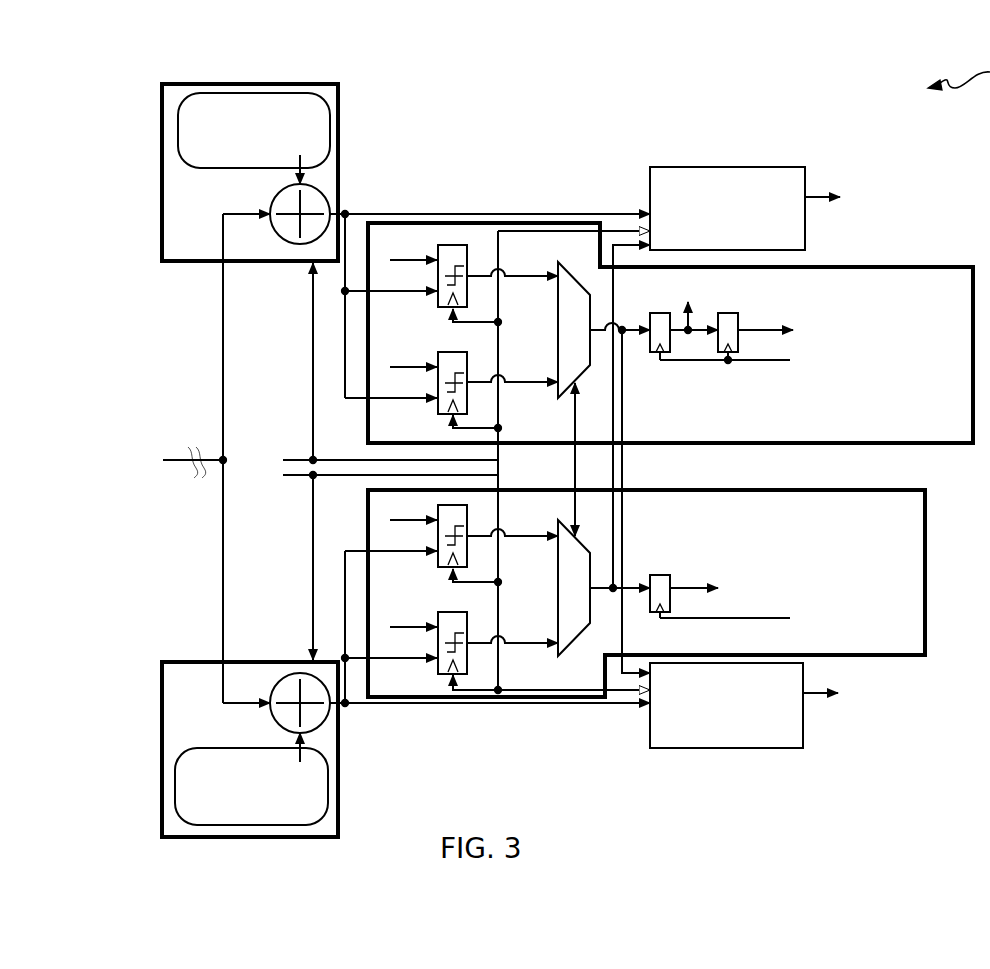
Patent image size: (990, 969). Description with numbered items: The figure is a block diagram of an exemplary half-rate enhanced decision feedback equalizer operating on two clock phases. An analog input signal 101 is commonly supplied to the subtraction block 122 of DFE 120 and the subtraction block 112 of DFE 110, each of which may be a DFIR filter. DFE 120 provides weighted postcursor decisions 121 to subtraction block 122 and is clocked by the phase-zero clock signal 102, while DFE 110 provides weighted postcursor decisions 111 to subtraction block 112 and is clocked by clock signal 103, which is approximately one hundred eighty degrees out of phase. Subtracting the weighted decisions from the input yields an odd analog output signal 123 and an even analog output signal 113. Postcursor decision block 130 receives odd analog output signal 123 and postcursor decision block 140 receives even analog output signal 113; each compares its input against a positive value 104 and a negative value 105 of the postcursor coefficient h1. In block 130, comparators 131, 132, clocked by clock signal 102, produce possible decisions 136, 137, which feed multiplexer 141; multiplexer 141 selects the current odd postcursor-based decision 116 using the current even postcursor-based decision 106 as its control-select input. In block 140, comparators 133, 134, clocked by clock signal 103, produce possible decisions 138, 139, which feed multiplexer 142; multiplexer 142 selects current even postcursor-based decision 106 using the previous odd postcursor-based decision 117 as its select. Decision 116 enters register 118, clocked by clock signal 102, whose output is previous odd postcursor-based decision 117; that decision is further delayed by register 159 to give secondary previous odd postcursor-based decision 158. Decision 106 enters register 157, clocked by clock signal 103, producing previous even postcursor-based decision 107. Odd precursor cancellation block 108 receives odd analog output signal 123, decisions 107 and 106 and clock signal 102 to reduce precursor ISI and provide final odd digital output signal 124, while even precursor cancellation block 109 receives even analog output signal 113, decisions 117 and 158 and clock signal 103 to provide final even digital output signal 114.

The analog input signal 101 is at (218, 462).
The clock signal 102 is at (800, 372).
The clock signal 103 is at (826, 614).
The positive value of postcursor coefficient h1 104 is at (428, 286).
The negative value of postcursor coefficient h1 105 is at (428, 393).
The current even postcursor-based decision 106 is at (634, 580).
The previous even postcursor-based decision 107 is at (722, 586).
The odd precursor cancellation block 108 is at (712, 166).
The even precursor cancellation block 109 is at (696, 750).
The DFE 110 is at (162, 752).
The weighted postcursor decisions 111 is at (256, 748).
The subtraction block 112 is at (262, 708).
The even analog output signal 113 is at (350, 712).
The final even digital output signal 114 is at (842, 692).
The current odd postcursor-based decision 116 is at (644, 336).
The previous odd postcursor-based decision 117 is at (700, 304).
The register 118 is at (656, 308).
The DFE 120 is at (162, 172).
The weighted postcursor decisions 121 is at (240, 175).
The subtraction block 122 is at (262, 200).
The odd analog output signal 123 is at (350, 212).
The final odd digital output signal 124 is at (842, 200).
The postcursor decision block 130 is at (368, 436).
The comparator 131 is at (430, 322).
The comparator 132 is at (430, 428).
The comparator 133 is at (430, 582).
The comparator 134 is at (430, 688).
The possible decision 136 is at (536, 286).
The possible decision 137 is at (554, 378).
The possible decision 138 is at (536, 546).
The possible decision 139 is at (554, 638).
The postcursor decision block 140 is at (368, 496).
The multiplexer 141 is at (564, 394).
The multiplexer 142 is at (564, 654).
The register 157 is at (656, 618).
The secondary previous odd postcursor-based decision 158 is at (792, 332).
The register 159 is at (740, 336).